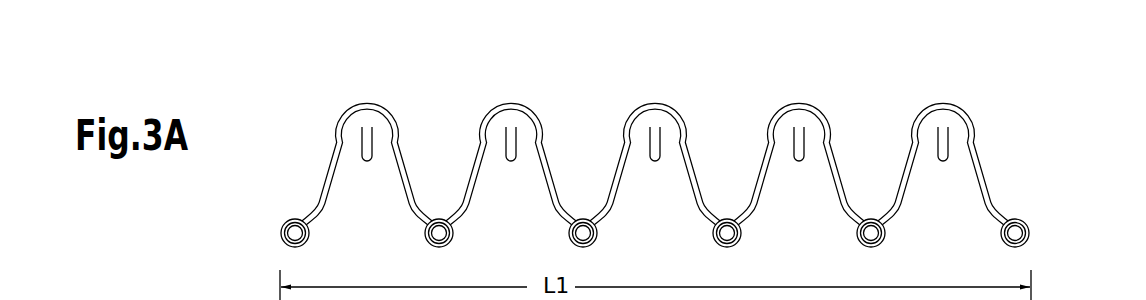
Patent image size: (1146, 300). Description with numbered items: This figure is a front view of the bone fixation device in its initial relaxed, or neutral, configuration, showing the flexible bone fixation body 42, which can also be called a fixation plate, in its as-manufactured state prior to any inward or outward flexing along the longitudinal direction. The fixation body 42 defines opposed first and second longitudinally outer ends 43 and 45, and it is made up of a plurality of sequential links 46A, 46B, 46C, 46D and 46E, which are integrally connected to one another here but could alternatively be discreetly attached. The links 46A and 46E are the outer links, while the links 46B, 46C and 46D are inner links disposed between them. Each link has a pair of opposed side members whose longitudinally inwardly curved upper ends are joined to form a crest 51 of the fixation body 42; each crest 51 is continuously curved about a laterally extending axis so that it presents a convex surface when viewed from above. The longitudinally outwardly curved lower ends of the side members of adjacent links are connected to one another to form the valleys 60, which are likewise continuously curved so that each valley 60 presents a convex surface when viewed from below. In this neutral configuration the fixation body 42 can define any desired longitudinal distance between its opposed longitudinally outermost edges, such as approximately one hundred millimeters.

The flexible bone fixation body 42 is at (345, 103).
The first longitudinally outer end 43 is at (280, 235).
The second longitudinally outer end 45 is at (1031, 235).
The outer link 46A is at (387, 122).
The inner link 46B is at (531, 122).
The inner link 46C is at (675, 122).
The inner link 46D is at (819, 122).
The outer link 46E is at (963, 122).
The crest 51 is at (365, 122).
The valley 60 is at (439, 247).